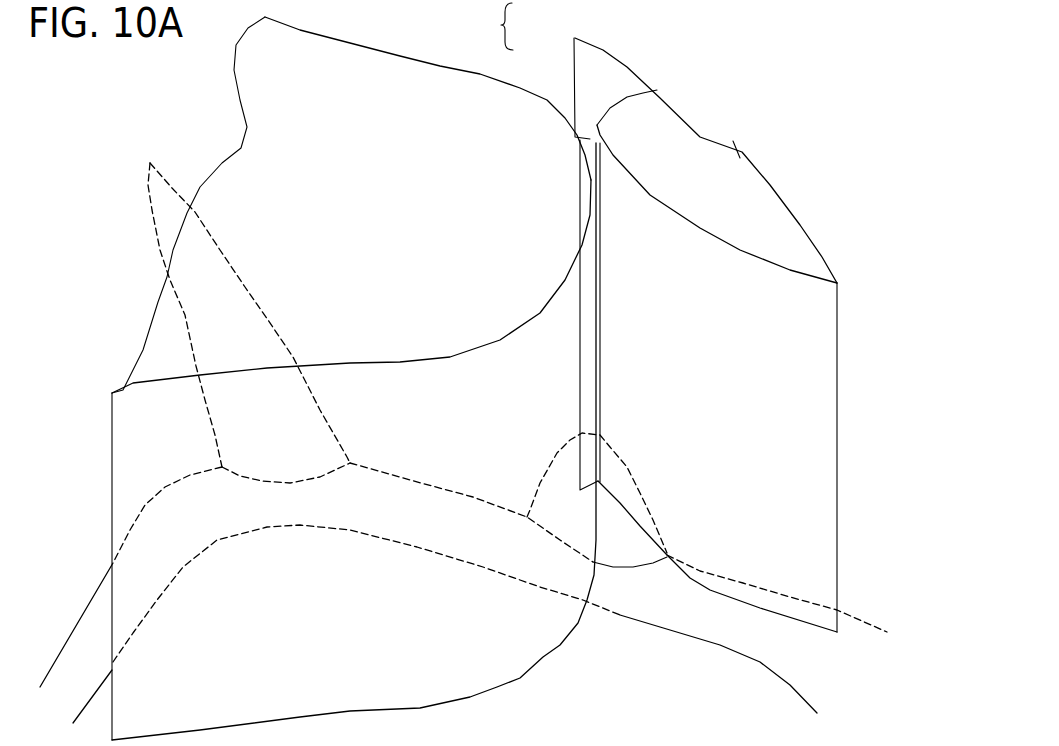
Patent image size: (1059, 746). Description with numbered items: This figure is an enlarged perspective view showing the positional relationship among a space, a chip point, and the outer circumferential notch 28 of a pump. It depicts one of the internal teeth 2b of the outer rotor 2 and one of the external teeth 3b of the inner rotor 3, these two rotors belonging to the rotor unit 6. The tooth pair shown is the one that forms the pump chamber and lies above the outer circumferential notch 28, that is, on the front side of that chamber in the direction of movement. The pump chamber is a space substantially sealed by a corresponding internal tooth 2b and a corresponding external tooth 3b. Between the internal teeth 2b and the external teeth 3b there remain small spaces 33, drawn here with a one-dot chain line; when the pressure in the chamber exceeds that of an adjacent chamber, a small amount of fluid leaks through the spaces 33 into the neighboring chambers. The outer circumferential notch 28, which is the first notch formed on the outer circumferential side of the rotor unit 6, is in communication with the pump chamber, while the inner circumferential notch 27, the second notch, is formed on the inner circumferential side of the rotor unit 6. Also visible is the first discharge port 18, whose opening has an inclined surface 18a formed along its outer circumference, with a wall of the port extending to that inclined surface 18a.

The outer rotor 2 is at (557, 247).
The internal teeth 2b is at (731, 335).
The inner rotor 3 is at (428, 98).
The external teeth 3b is at (354, 378).
The rotor unit 6 is at (500, 26).
The first discharge port 18 is at (390, 571).
The inclined surface 18a is at (718, 664).
The inner circumferential notch 27 is at (195, 443).
The outer circumferential notch 28 is at (630, 620).
The spaces 33 is at (717, 168).